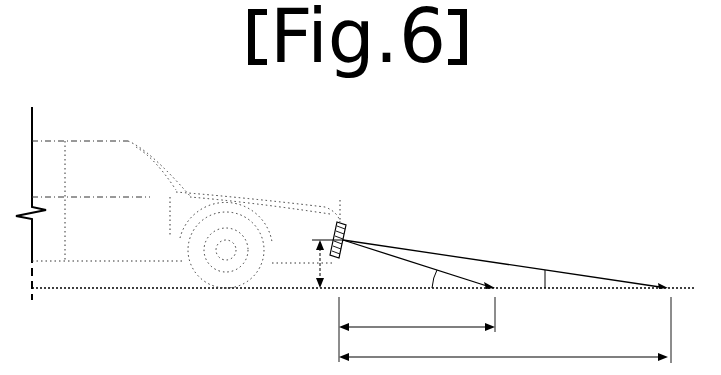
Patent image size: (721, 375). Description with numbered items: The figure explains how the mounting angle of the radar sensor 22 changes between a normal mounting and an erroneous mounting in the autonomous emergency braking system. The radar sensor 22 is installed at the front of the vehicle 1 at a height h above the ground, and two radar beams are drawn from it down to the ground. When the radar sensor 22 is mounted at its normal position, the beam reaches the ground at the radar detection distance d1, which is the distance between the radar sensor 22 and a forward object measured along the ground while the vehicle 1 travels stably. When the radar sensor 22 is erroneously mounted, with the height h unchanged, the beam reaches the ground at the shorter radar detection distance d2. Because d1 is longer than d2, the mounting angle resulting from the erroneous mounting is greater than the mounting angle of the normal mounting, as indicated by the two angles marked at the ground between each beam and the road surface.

The vehicle 1 is at (93, 141).
The radar sensor 22 is at (341, 222).
The height of the radar sensor h is at (324, 264).
The radar detection distance (normal mounting) d1 is at (503, 351).
The radar detection distance (erroneous mounting) d2 is at (417, 320).